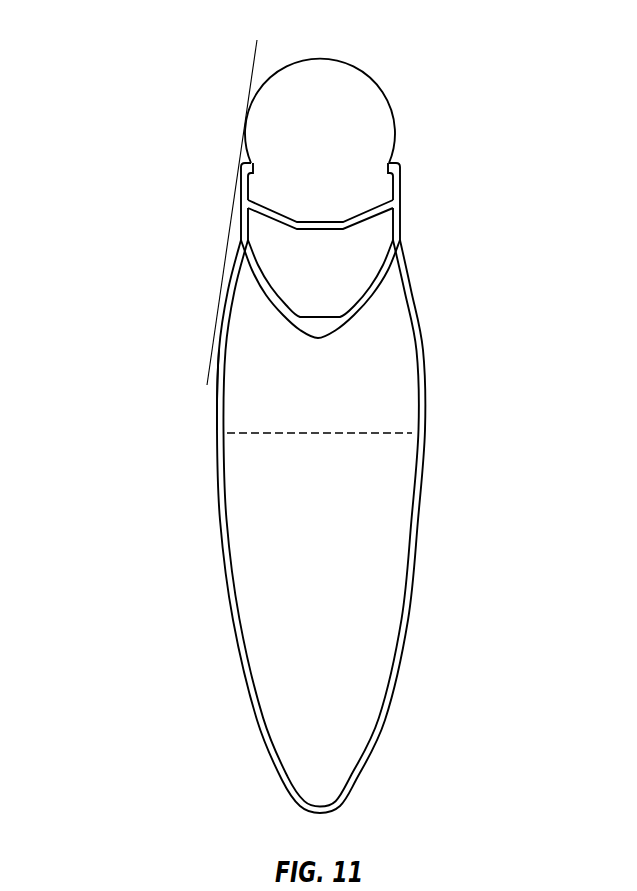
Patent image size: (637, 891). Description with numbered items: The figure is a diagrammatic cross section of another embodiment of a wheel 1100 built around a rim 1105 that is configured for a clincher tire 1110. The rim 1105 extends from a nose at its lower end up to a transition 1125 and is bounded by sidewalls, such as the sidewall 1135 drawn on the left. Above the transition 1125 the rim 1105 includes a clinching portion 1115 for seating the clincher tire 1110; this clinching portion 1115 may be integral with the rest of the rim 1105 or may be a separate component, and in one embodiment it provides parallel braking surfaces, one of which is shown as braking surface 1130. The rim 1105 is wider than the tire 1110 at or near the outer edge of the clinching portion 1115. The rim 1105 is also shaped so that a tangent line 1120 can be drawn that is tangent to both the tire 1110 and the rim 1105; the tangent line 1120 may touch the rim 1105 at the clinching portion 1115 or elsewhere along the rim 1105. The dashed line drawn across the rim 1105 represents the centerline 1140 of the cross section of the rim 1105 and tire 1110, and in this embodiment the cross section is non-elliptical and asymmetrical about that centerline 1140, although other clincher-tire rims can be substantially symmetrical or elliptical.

The wheel 1100 is at (119, 261).
The rim 1105 is at (407, 351).
The clincher tire 1110 is at (374, 103).
The clinching portion 1115 is at (240, 205).
The tangent line 1120 is at (253, 56).
The transition 1125 is at (240, 170).
The braking surface 1130 is at (239, 222).
The sidewall 1135 is at (217, 396).
The centerline 1140 is at (287, 434).